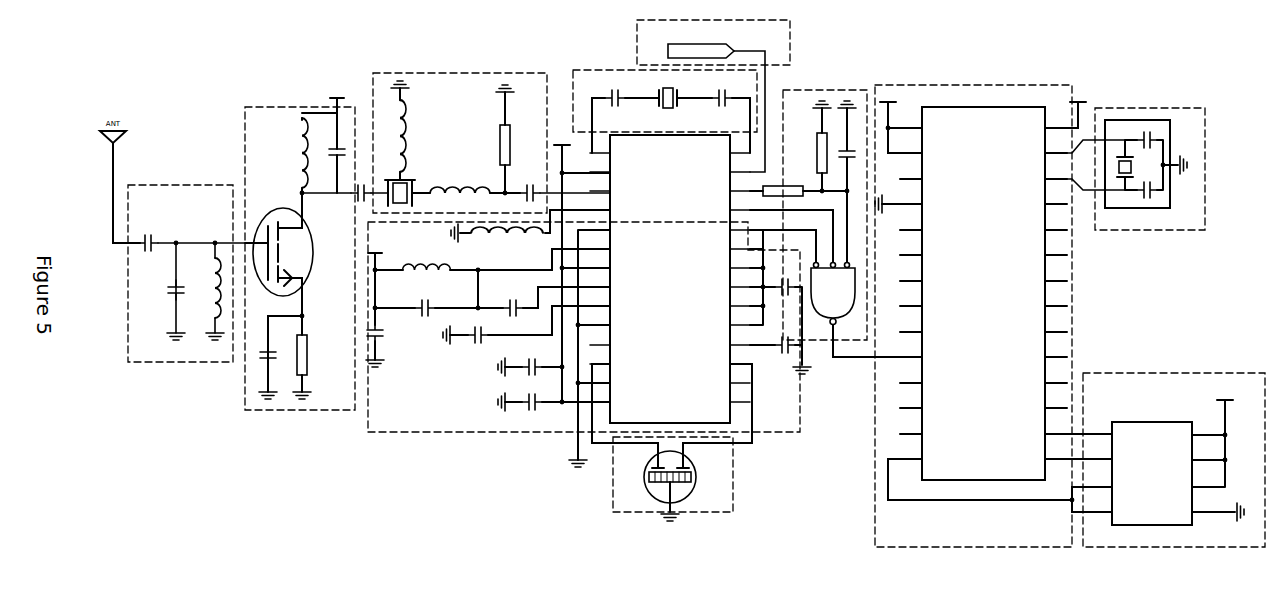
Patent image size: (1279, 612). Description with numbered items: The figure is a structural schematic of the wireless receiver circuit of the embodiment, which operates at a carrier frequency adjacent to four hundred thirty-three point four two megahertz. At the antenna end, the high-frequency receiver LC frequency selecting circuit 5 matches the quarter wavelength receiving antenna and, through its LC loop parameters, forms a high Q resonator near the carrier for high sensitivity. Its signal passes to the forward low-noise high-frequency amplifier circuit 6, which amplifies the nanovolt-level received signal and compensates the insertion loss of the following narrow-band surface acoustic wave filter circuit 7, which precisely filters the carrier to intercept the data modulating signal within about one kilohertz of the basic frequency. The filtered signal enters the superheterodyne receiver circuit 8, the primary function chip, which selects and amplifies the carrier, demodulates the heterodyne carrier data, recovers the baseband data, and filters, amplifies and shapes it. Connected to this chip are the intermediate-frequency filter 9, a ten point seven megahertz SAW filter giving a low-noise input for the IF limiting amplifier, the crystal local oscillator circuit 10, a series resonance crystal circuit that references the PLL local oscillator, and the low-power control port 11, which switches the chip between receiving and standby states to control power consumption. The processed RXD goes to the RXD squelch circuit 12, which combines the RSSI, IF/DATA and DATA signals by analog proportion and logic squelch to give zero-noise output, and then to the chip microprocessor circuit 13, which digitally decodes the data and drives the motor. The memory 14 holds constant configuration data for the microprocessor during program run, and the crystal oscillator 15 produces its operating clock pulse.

The high-frequency receiver LC frequency selecting circuit 5 is at (193, 273).
The forward low-noise high-frequency amplifier circuit 6 is at (316, 247).
The narrow-band surface acoustic wave filter circuit 7 is at (491, 143).
The superheterodyne receiver circuit 8 is at (583, 298).
The intermediate-frequency filter 9 is at (672, 442).
The crystal local oscillator circuit 10 is at (665, 111).
The low-power control port 11 is at (713, 96).
The RXD squelch circuit 12 is at (825, 232).
The chip microprocessor circuit 13 is at (1000, 316).
The memory 14 is at (1174, 460).
The crystal oscillator 15 is at (1150, 169).